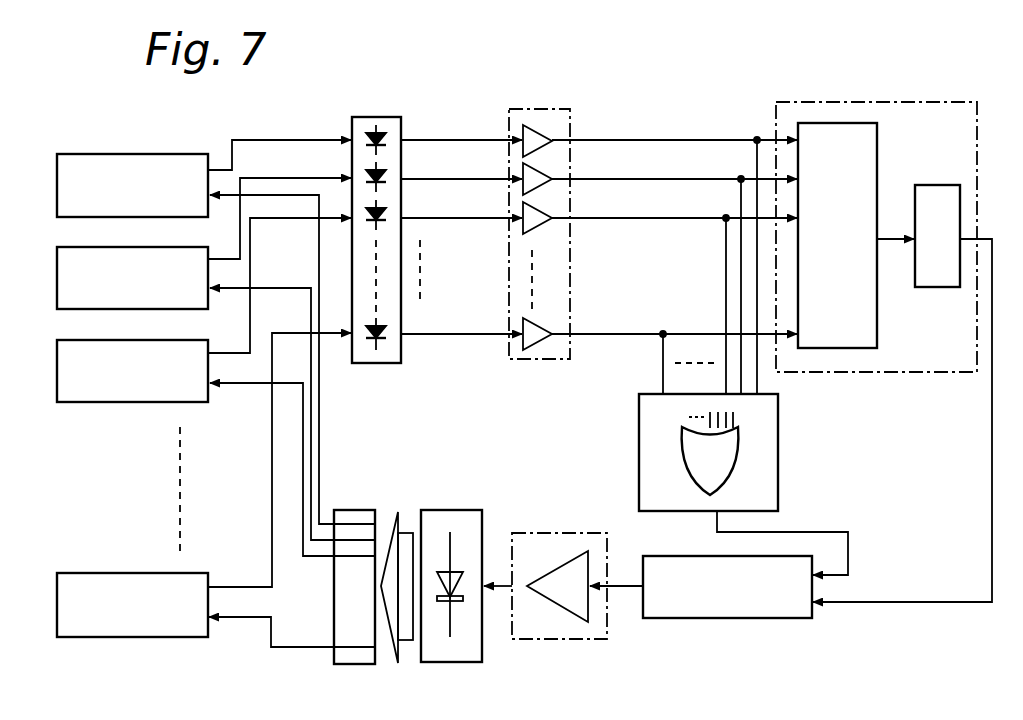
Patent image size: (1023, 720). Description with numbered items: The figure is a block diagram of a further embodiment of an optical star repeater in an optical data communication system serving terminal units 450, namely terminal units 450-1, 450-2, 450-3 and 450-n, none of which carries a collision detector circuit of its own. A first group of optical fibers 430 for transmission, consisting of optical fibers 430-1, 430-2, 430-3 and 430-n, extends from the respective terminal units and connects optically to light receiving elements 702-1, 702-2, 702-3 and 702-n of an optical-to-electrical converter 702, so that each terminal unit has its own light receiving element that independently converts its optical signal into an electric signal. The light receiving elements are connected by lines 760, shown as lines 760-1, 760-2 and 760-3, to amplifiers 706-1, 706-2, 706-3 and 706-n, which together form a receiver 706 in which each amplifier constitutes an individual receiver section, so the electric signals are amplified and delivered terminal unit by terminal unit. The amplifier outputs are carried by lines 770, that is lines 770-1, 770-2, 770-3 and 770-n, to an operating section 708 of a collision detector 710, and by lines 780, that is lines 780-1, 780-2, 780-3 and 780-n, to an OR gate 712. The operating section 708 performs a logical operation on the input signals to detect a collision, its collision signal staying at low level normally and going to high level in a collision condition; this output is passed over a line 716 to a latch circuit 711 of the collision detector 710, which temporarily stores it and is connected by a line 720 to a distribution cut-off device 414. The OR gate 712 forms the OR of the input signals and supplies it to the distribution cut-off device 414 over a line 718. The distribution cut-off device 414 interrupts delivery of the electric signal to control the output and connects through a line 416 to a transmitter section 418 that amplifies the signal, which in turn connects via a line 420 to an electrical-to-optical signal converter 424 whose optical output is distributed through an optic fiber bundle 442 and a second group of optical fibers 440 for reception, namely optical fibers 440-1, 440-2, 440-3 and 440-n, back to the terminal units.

The terminal units 450 is at (134, 117).
The terminal unit 450-1 is at (106, 153).
The terminal unit 450-2 is at (143, 247).
The terminal unit 450-3 is at (143, 340).
The terminal unit 450-n is at (143, 573).
The first group of optical fibers 430 is at (321, 101).
The optical fiber 430-1 is at (285, 139).
The optical fiber 430-2 is at (292, 178).
The optical fiber 430-3 is at (294, 219).
The optical fiber 430-n is at (272, 323).
The second group of optical fibers 440 is at (416, 431).
The optical fiber 440-1 is at (320, 395).
The optical fiber 440-2 is at (312, 420).
The optical fiber 440-3 is at (304, 450).
The optical fiber 440-n is at (300, 648).
The optical-to-electrical converter 702 is at (381, 117).
The light receiving element 702-1 is at (400, 128).
The light receiving element 702-2 is at (401, 168).
The light receiving element 702-3 is at (401, 208).
The light receiving element 702-n is at (401, 328).
The lines 760 is at (444, 92).
The line 760-1 is at (470, 140).
The line 760-2 is at (497, 178).
The line 760-3 is at (494, 222).
The receiver 706 is at (571, 109).
The amplifier 706-1 is at (556, 137).
The amplifier 706-2 is at (556, 175).
The amplifier 706-3 is at (556, 212).
The amplifier 706-n is at (538, 352).
The lines 770 is at (723, 95).
The line 770-1 is at (730, 139).
The line 770-2 is at (723, 178).
The line 770-3 is at (714, 217).
The line 770-n is at (674, 321).
The lines 780 is at (786, 381).
The line 780-1 is at (756, 238).
The line 780-2 is at (740, 266).
The line 780-3 is at (726, 294).
The line 780-n is at (626, 364).
The collision detector 710 is at (862, 102).
The operating section 708 is at (879, 146).
The latch circuit 711 is at (940, 185).
The line 716 is at (880, 241).
The OR gate 712 is at (780, 449).
The line 718 is at (836, 531).
The line 720 is at (992, 486).
The distribution cut-off device 414 is at (722, 619).
The line 416 is at (626, 584).
The transmitter section 418 is at (558, 533).
The line 420 is at (498, 583).
The electrical-to-optical signal converter 424 is at (458, 510).
The optic fiber bundle 442 is at (356, 510).